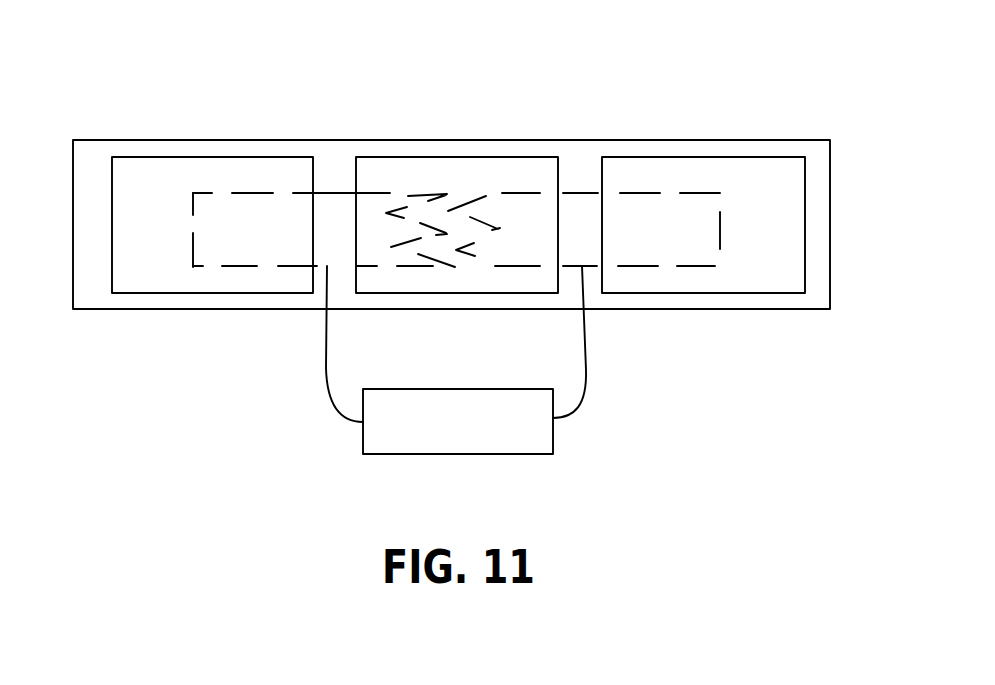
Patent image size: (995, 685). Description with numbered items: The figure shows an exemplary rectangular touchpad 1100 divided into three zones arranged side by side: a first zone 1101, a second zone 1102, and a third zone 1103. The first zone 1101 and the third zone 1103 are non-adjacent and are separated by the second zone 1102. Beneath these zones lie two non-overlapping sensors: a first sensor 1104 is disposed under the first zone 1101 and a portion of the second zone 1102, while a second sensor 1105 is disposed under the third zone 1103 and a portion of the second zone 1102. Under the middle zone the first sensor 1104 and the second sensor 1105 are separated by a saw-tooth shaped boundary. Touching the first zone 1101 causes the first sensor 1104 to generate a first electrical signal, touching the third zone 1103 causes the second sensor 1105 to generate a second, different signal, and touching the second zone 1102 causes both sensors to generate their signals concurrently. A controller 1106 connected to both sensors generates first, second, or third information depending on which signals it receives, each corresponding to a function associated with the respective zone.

The touchpad 1100 is at (487, 40).
The first zone 1101 is at (148, 183).
The second zone 1102 is at (466, 170).
The third zone 1103 is at (778, 225).
The first sensor 1104 is at (266, 252).
The second sensor 1105 is at (698, 247).
The controller 1106 is at (363, 430).